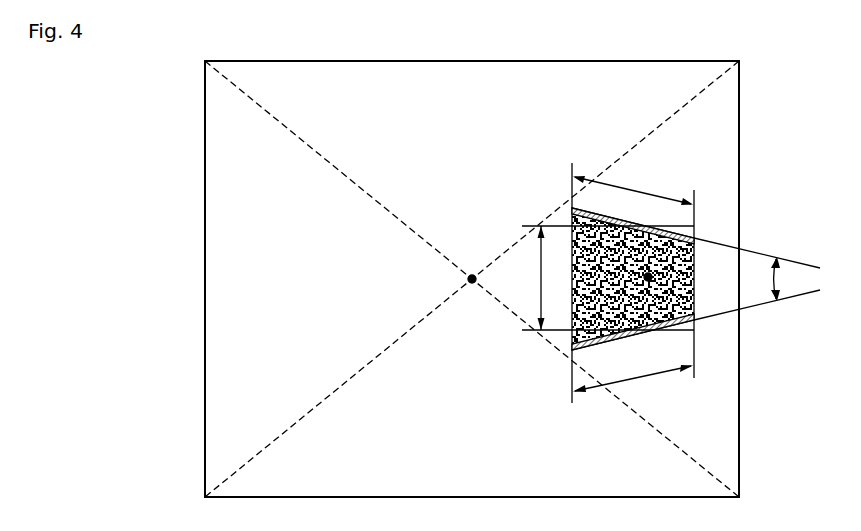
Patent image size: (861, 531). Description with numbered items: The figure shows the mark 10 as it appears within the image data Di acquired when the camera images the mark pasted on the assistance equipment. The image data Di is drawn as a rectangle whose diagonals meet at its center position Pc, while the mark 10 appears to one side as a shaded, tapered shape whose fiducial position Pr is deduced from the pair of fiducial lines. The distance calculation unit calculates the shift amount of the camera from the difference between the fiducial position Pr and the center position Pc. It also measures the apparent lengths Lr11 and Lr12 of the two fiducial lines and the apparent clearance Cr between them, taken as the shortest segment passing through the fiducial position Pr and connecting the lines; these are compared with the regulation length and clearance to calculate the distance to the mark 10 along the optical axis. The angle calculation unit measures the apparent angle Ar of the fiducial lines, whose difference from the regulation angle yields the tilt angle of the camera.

The mark 10 is at (703, 228).
The image data Di is at (205, 230).
The center position Pc is at (468, 279).
The fiducial position Pr is at (648, 277).
The apparent clearance Cr is at (530, 278).
The apparent angle Ar is at (763, 279).
The apparent length Lr11 is at (633, 200).
The apparent length Lr12 is at (633, 361).